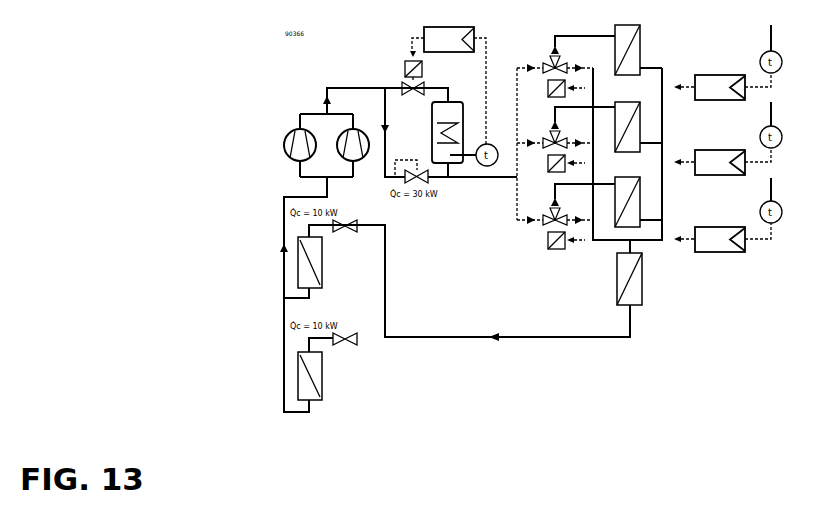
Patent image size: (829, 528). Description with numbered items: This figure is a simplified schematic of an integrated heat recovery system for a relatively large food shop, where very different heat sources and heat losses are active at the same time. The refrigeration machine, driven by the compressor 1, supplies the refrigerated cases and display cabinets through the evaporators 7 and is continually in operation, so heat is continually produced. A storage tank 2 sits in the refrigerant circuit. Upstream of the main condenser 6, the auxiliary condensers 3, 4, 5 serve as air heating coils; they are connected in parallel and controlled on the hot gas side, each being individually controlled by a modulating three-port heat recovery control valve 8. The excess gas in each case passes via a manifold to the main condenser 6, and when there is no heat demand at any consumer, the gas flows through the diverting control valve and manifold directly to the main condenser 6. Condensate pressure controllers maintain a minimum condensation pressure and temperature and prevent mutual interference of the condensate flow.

The compressor 1 is at (326, 145).
The storage tank 2 is at (441, 132).
The auxiliary condenser 3 is at (633, 50).
The auxiliary condenser 4 is at (633, 127).
The auxiliary condenser 5 is at (633, 202).
The main condenser 6 is at (635, 279).
The evaporator 7 is at (316, 318).
The heat recovery control valve 8 is at (560, 167).